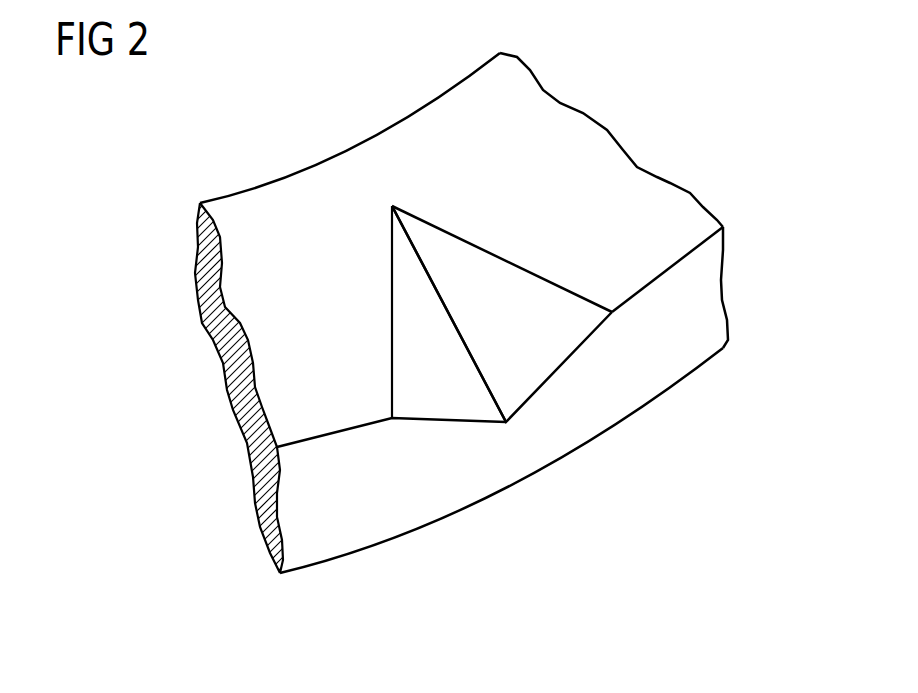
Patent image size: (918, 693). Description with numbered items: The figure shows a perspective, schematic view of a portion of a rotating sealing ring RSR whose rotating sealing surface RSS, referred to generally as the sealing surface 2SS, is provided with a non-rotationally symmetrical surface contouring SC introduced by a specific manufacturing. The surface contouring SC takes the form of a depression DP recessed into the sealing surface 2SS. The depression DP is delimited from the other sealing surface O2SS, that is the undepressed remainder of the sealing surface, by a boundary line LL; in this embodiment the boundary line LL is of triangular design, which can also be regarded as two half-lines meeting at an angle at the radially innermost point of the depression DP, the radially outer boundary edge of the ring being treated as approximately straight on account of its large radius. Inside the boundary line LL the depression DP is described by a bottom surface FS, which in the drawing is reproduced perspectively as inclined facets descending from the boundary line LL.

The other sealing surface O2SS is at (318, 193).
The sealing surface 2SS is at (655, 202).
The rotating sealing surface RSS is at (695, 205).
The surface contouring SC is at (492, 275).
The depression DP is at (502, 292).
The bottom surface FS is at (547, 310).
The boundary line LL is at (392, 297).
The rotating sealing ring RSR is at (660, 380).